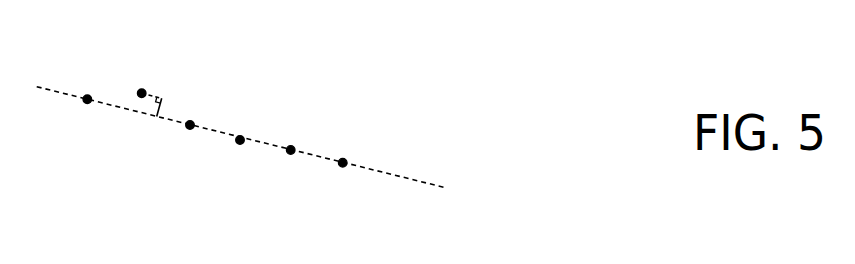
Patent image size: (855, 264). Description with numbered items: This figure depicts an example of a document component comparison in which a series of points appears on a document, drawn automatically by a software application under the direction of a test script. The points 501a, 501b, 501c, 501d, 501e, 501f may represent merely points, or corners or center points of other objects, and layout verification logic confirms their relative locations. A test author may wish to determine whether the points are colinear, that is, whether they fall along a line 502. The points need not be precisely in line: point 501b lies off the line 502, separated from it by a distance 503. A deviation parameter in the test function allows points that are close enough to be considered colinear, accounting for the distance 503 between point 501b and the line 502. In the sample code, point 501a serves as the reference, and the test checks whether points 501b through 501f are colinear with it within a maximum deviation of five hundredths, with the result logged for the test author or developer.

The point 501a is at (87, 99).
The point 501b is at (142, 93).
The point 501c is at (190, 125).
The point 501d is at (240, 140).
The point 501e is at (291, 150).
The point 501f is at (343, 163).
The line 502 is at (420, 181).
The distance 503 is at (162, 99).